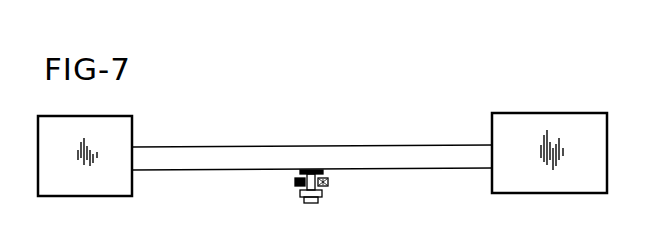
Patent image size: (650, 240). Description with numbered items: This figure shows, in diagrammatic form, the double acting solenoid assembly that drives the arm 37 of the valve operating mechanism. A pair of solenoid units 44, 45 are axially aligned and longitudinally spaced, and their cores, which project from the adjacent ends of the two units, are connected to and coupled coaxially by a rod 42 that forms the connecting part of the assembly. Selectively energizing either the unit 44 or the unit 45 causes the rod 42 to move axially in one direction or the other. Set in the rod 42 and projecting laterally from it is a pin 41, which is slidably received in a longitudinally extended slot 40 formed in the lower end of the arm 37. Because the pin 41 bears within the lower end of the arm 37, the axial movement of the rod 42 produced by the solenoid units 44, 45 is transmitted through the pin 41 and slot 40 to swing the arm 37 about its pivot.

The solenoid unit 44 is at (86, 126).
The rod 42 is at (231, 151).
The solenoid unit 45 is at (534, 128).
The arm 37 is at (327, 181).
The slot 40 is at (297, 183).
The pin 41 is at (312, 203).